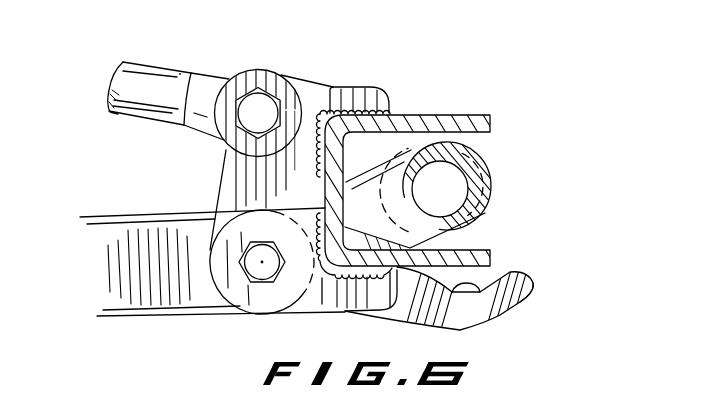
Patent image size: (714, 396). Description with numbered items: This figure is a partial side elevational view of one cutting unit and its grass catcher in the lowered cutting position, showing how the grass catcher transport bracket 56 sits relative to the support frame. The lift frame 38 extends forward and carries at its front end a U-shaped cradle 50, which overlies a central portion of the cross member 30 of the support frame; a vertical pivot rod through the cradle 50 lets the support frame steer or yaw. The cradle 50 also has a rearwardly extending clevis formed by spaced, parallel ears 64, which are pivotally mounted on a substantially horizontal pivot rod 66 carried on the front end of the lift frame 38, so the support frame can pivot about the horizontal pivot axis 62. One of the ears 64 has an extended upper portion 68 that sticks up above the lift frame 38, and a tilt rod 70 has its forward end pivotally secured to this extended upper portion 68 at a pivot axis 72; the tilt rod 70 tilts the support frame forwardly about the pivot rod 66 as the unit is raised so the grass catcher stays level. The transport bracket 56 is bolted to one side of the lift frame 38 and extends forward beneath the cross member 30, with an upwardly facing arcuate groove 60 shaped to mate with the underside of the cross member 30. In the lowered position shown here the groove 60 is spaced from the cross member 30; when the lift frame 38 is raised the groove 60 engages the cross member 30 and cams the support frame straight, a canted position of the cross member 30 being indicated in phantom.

The cross member 30 is at (487, 187).
The lift frame 38 is at (113, 222).
The U-shaped cradle 50 is at (463, 113).
The grass catcher transport bracket 56 is at (522, 302).
The arcuate recess or groove 60 is at (490, 305).
The horizontal pivot axis 62 is at (261, 265).
The ears 64 is at (340, 303).
The pivot rod 66 is at (237, 216).
The extended upper portion 68 is at (335, 86).
The tilt rod 70 is at (162, 54).
The pivot axis 72 is at (258, 108).